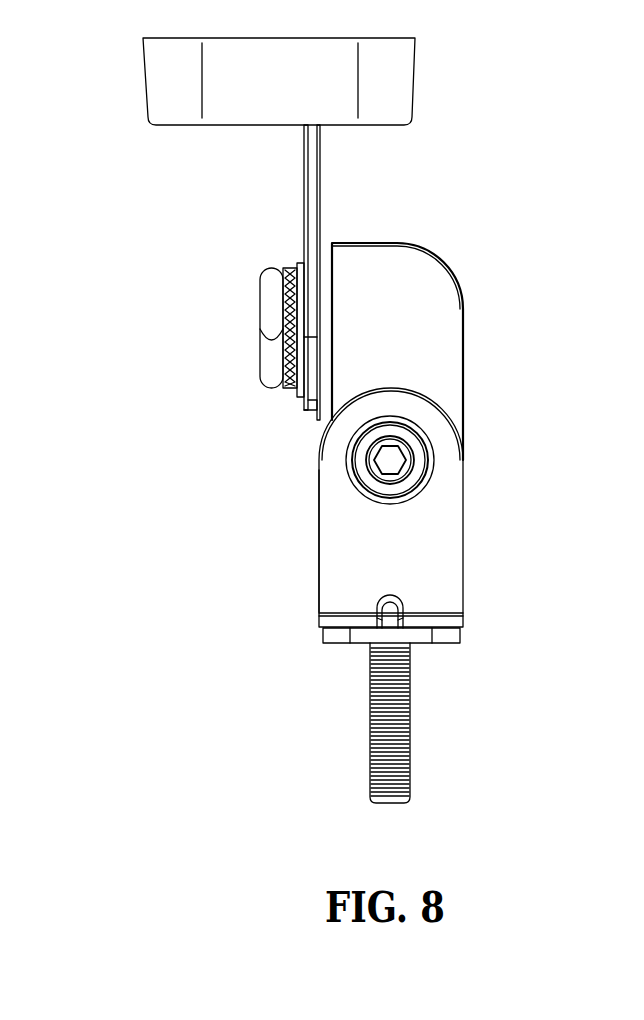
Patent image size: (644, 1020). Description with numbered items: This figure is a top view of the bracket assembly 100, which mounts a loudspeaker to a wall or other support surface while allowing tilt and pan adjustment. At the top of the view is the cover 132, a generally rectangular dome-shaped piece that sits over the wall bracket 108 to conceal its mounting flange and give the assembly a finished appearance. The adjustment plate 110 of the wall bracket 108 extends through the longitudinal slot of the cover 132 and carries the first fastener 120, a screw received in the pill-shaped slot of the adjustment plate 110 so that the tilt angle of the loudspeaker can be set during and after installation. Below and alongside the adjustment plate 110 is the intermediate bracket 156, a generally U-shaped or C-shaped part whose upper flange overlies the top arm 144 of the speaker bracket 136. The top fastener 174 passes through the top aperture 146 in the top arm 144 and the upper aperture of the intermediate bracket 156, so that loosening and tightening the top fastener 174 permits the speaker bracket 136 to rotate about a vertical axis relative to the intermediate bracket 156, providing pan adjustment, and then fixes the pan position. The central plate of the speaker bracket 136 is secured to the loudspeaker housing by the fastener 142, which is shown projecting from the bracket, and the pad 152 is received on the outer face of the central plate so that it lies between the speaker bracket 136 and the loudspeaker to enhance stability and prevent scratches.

The bracket assembly 100 is at (174, 526).
The wall bracket 108 is at (291, 152).
The adjustment plate 110 is at (320, 207).
The first fastener 120 is at (265, 303).
The cover 132 is at (423, 75).
The speaker bracket 136 is at (321, 568).
The fastener 142 is at (410, 727).
The top arm 144 is at (443, 547).
The top aperture 146 is at (433, 460).
The pad 152 is at (343, 645).
The intermediate bracket 156 is at (440, 286).
The top fastener 174 is at (387, 460).